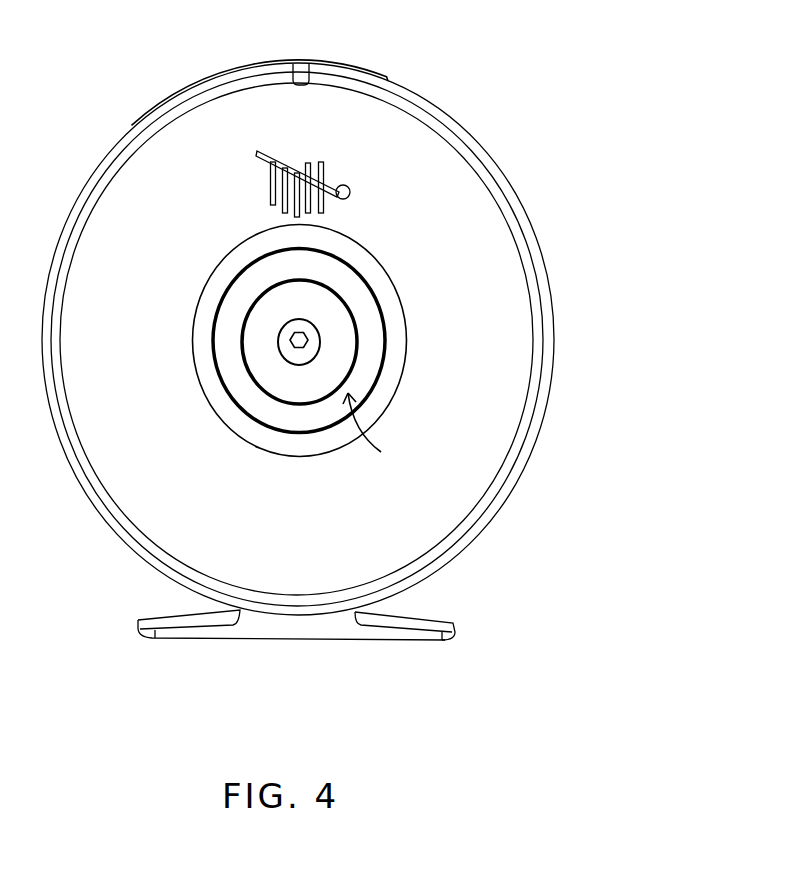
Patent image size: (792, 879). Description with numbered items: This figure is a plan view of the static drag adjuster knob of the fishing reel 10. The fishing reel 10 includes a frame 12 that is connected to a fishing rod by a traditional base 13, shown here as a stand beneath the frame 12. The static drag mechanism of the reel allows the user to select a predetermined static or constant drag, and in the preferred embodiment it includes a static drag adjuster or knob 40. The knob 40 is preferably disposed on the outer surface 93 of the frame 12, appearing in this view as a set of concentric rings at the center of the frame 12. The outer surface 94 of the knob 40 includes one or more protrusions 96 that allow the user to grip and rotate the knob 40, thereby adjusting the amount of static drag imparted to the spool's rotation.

The fishing reel 10 is at (714, 118).
The frame 12 is at (445, 107).
The outer surface 93 is at (511, 232).
The outer surface 94 is at (372, 252).
The static drag adjuster knob 40 is at (193, 307).
The protrusions 96 is at (372, 438).
The base 13 is at (457, 623).